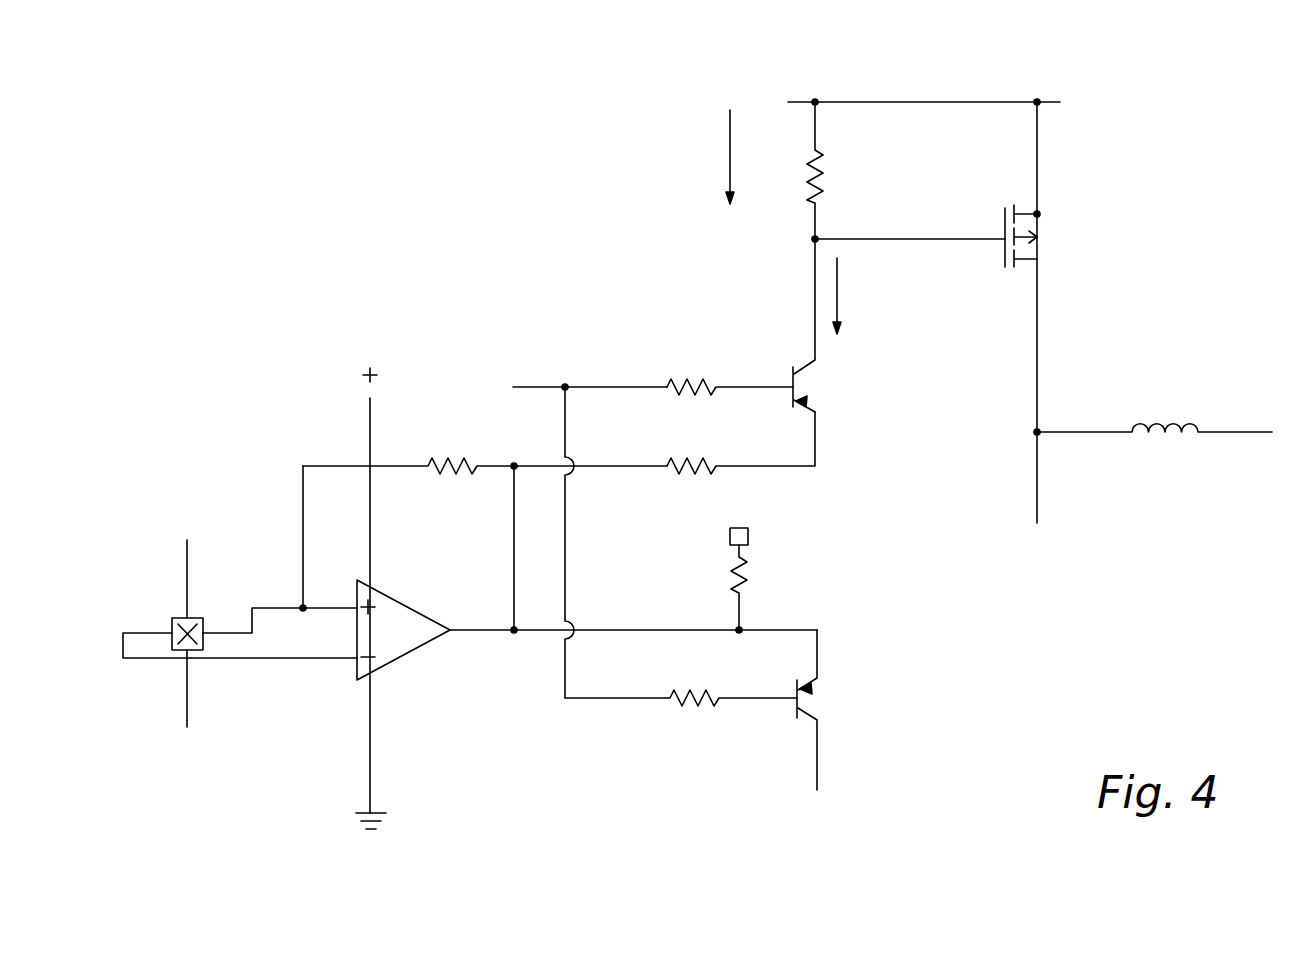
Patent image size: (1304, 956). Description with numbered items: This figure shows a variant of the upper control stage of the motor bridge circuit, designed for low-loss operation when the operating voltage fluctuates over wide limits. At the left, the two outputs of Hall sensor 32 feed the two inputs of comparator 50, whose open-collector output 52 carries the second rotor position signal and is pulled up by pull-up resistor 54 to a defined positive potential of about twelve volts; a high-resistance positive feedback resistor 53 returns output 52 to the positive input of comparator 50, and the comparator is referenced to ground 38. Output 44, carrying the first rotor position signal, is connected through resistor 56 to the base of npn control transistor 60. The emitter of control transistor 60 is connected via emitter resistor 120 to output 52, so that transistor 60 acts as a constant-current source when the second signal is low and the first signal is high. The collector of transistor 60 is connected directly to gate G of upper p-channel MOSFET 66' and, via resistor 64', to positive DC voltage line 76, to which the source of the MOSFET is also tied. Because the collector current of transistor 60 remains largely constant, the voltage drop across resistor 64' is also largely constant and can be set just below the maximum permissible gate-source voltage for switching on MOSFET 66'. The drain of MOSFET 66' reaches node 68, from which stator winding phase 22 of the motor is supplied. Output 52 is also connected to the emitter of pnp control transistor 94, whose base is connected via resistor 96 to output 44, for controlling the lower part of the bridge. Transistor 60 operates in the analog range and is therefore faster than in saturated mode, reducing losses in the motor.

The rotor position sensor 32 is at (174, 618).
The comparator 50 is at (410, 648).
The positive feedback resistor 53 is at (447, 460).
The output of comparator 52 is at (514, 633).
The output of comparator 44 is at (563, 386).
The resistor 56 is at (705, 384).
The emitter resistor 120 is at (705, 462).
The npn control transistor 60 is at (792, 367).
The positive DC voltage line 76 is at (928, 102).
The resistor 64' is at (844, 218).
The p-channel MOSFET 66' is at (1005, 267).
The node 68 is at (1036, 432).
The stator winding phase 22 is at (1165, 433).
The pull-up resistor 54 is at (745, 575).
The pnp control transistor 94 is at (796, 716).
The resistor 96 is at (680, 699).
The ground 38 is at (377, 829).